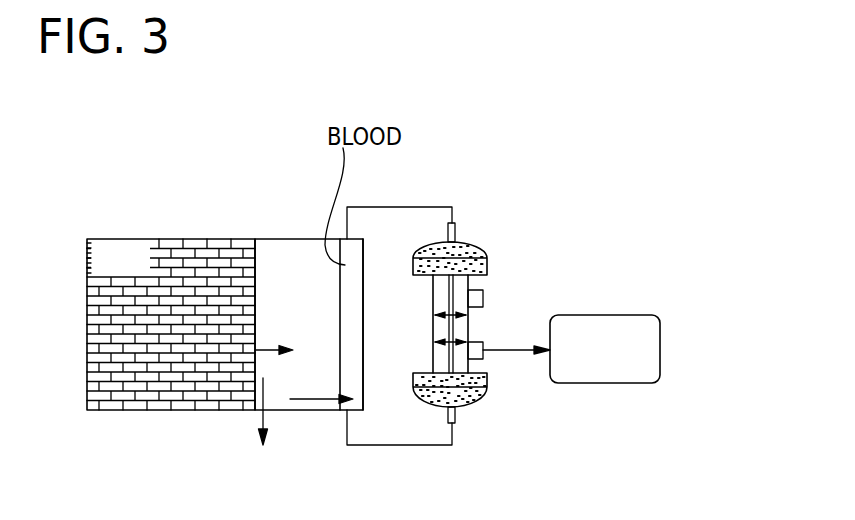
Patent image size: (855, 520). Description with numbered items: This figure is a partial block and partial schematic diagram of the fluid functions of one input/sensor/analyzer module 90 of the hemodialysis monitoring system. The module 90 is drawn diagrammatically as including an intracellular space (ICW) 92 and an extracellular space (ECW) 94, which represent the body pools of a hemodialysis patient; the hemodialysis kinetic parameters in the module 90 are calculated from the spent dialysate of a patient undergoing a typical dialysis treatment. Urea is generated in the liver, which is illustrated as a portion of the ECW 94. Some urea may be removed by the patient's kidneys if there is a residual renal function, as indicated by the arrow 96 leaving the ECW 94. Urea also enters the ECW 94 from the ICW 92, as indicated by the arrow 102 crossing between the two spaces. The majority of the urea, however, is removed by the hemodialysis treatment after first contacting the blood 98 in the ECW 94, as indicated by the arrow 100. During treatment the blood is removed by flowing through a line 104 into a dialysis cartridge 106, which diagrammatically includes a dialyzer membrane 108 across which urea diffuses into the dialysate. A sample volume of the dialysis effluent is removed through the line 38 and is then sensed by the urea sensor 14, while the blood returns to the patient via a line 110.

The urea sensor 14 is at (643, 312).
The line 38 is at (502, 352).
The input/sensor/analyzer module 90 is at (507, 303).
The intracellular space (ICW) 92 is at (133, 238).
The extracellular space (ECW) 94 is at (293, 238).
The arrow 96 is at (267, 418).
The blood 98 is at (364, 259).
The arrow 100 is at (312, 398).
The arrow 102 is at (263, 348).
The line 104 is at (436, 207).
The dialysis cartridge 106 is at (483, 242).
The dialyzer membrane 108 is at (453, 288).
The line 110 is at (418, 447).